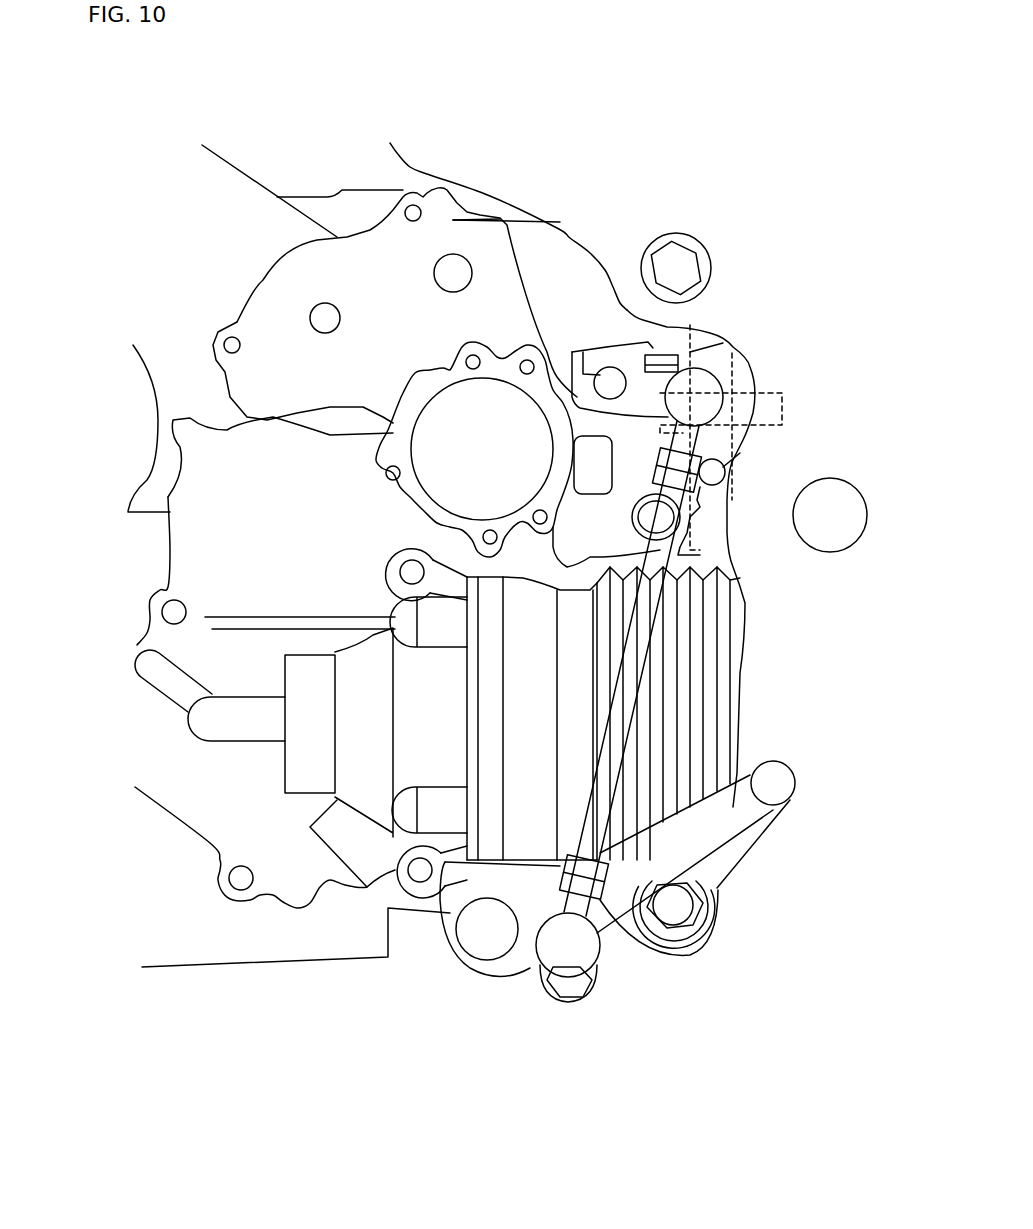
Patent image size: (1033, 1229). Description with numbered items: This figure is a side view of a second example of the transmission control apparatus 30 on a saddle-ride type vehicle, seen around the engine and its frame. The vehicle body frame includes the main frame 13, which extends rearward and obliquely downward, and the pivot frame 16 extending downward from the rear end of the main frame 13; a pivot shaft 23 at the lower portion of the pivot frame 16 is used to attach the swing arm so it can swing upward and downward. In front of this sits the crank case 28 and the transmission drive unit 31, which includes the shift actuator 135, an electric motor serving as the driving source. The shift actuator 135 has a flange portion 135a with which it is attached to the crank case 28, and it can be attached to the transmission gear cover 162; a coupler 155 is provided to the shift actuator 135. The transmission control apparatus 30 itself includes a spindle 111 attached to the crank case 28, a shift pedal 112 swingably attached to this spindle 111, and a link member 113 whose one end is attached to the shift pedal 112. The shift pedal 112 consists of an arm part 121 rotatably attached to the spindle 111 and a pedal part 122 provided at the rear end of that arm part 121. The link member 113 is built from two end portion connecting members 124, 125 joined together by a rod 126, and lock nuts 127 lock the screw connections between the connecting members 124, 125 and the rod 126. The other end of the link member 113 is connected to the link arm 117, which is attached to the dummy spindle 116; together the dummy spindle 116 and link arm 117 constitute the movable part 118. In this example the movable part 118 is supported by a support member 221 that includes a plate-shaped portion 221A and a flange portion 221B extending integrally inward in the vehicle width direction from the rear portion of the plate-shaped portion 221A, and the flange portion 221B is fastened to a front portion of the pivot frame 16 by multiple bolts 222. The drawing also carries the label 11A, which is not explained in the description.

The main frame 13 is at (440, 153).
The shift actuator 135 is at (455, 427).
The flange portion 135a is at (415, 402).
The transmission drive unit 31 is at (503, 256).
The transmission gear cover 162 is at (243, 390).
The coupler 155 is at (585, 470).
The movable part 118 is at (735, 143).
The dummy spindle 116 is at (613, 368).
The link arm 117 is at (652, 384).
The end portion connecting member 125 is at (697, 383).
The engine body 11A is at (780, 367).
The transmission control apparatus 30 is at (738, 383).
The bolts 222 is at (776, 391).
The support member 221 is at (725, 445).
The lock nut 127 is at (695, 481).
The pivot shaft 23 is at (838, 545).
The flange portion 221B is at (735, 562).
The plate-shaped portion 221A is at (620, 537).
The pivot frame 16 is at (777, 720).
The pedal part 122 is at (796, 783).
The rod 126 is at (623, 707).
The shift pedal 112 is at (752, 828).
The crank case 28 is at (215, 943).
The link member 113 is at (593, 797).
The spindle 111 is at (477, 940).
The end portion connecting member 124 is at (563, 950).
The arm part 121 is at (657, 873).